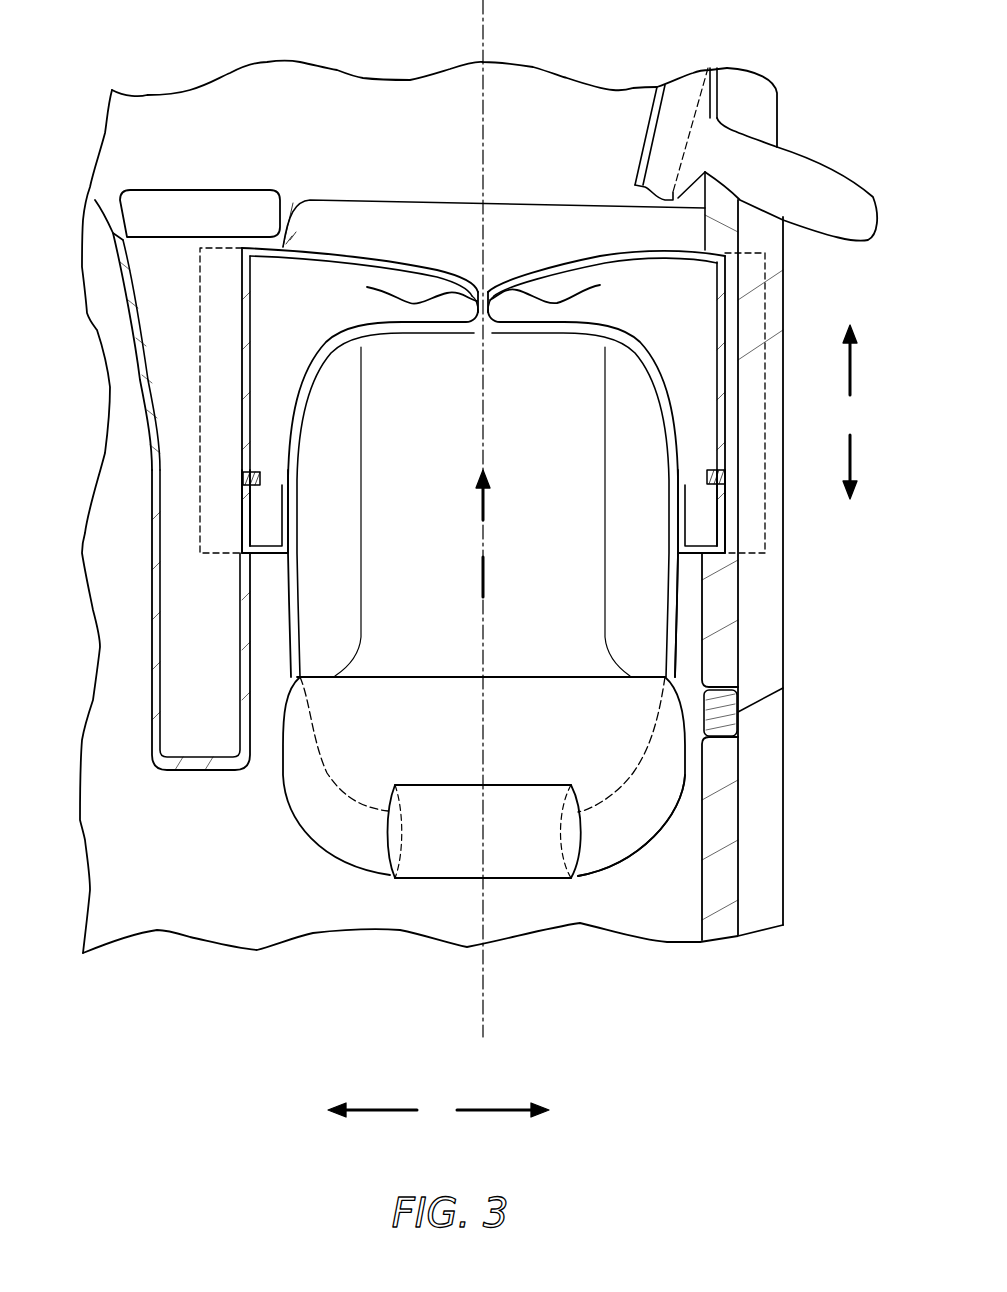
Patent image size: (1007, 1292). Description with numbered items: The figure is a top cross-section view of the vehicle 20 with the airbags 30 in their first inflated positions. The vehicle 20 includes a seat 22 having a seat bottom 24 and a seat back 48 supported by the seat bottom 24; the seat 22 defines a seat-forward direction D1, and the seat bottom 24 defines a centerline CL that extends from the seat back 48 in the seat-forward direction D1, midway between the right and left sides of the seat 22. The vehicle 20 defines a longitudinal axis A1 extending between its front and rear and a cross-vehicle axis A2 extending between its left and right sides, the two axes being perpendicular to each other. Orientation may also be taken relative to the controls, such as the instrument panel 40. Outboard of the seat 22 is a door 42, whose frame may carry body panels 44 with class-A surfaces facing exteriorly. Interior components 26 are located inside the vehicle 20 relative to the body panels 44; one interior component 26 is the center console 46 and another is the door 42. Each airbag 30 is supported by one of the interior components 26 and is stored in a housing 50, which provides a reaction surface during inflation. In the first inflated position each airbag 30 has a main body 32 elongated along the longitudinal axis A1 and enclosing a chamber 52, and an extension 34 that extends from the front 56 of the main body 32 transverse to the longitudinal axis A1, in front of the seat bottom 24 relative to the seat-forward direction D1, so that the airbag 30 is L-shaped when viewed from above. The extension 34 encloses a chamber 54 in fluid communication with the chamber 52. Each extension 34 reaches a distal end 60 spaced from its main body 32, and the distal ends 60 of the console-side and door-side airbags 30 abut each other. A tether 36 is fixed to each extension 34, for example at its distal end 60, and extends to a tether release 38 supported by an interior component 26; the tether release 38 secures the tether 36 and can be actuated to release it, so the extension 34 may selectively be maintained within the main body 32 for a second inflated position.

The vehicle 20 is at (753, 113).
The seat 22 is at (265, 821).
The seat bottom 24 is at (408, 616).
The interior component 26 is at (147, 383).
The airbag 30 is at (320, 250).
The main body 32 is at (302, 428).
The extension 34 is at (400, 257).
The tether 36 is at (410, 305).
The tether release 38 is at (260, 477).
The instrument panel 40 is at (357, 107).
The door 42 is at (692, 563).
The body panels 44 is at (775, 577).
The center console 46 is at (152, 480).
The seat back 48 is at (610, 837).
The housing 50 is at (197, 290).
The chamber 52 is at (258, 448).
The chamber 54 is at (293, 305).
The front 56 is at (315, 383).
The distal end 60 is at (490, 287).
The centerline CL is at (483, 972).
The seat-forward direction D1 is at (483, 533).
The longitudinal axis A1 is at (849, 412).
The cross-vehicle axis A2 is at (438, 1110).